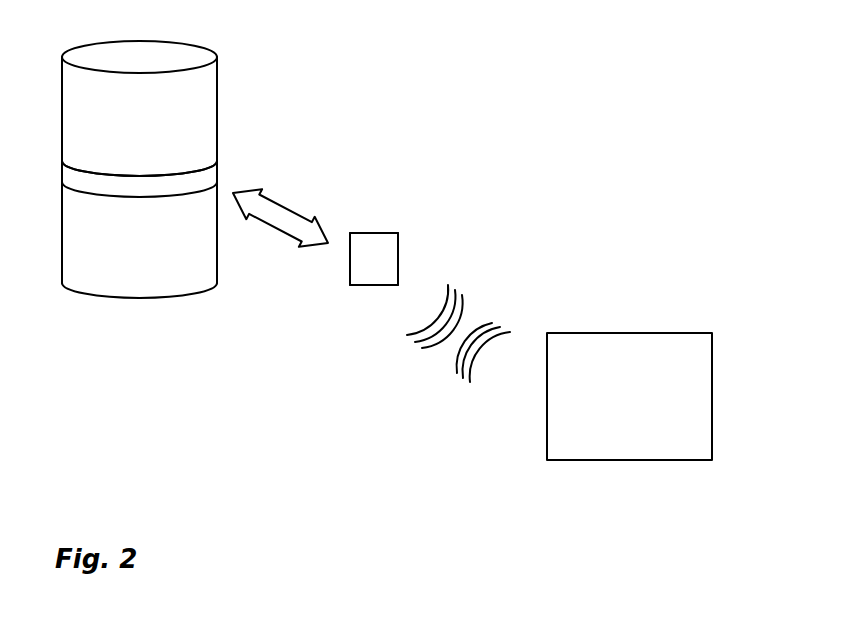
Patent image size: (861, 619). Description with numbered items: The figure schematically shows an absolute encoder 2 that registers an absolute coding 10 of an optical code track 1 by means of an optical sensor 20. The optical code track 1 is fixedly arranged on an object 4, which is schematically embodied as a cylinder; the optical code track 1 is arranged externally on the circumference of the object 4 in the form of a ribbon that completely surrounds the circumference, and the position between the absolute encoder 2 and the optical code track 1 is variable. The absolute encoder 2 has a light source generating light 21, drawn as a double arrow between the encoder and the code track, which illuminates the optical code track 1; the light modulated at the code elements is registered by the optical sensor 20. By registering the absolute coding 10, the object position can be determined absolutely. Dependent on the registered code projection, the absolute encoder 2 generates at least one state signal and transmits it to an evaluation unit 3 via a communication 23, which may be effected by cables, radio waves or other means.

The optical code track 1 is at (207, 173).
The absolute coding 10 is at (198, 173).
The absolute encoder 2 is at (375, 245).
The optical sensor 20 is at (385, 227).
The light 21 is at (280, 220).
The communication 23 is at (440, 365).
The evaluation unit 3 is at (622, 347).
The object 4 is at (78, 273).